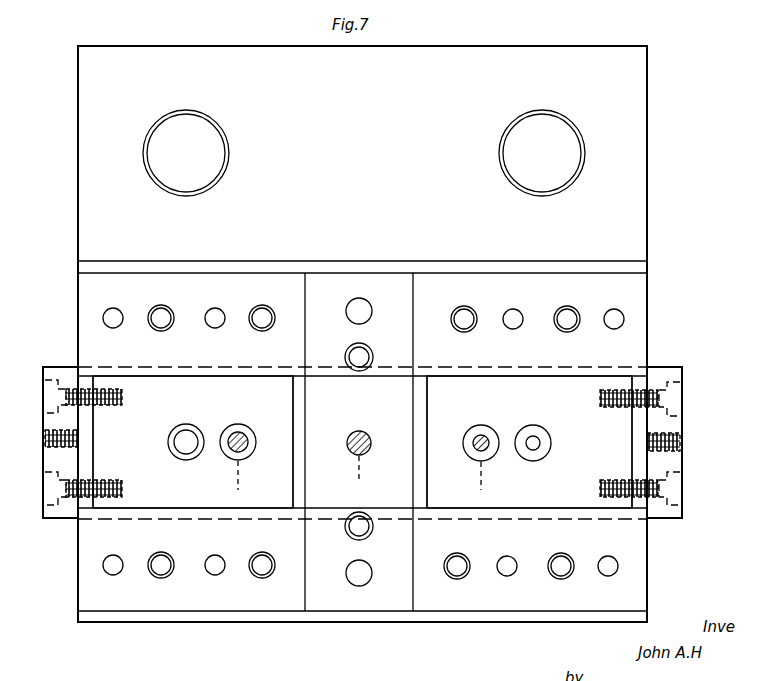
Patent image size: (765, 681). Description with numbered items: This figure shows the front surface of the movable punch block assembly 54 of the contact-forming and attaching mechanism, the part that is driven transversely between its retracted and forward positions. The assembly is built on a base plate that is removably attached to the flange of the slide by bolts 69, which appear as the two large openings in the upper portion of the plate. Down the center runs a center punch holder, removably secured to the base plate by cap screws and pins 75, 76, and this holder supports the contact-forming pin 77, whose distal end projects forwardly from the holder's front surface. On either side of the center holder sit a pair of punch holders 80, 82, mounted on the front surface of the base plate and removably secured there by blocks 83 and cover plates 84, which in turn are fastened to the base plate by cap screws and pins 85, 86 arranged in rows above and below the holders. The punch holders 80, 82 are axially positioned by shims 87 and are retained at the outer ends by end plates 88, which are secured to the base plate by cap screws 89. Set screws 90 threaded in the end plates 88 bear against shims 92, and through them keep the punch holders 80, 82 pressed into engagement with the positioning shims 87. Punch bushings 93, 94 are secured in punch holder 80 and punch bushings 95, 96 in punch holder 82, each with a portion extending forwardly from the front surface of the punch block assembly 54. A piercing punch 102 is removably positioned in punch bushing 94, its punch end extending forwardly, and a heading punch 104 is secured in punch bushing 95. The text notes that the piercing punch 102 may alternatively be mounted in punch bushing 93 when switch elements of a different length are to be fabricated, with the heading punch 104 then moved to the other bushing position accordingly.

The punch block assembly 54 is at (659, 165).
The bolts 69 is at (220, 137).
The cap screws and pins 75 is at (371, 352).
The cap screws and pins 76 is at (371, 305).
The contact-forming pin 77 is at (369, 436).
The punch holder 80 is at (545, 397).
The punch holder 82 is at (184, 400).
The blocks 83 is at (632, 540).
The cover plates 84 is at (650, 572).
The cap screws and pins 85 is at (161, 575).
The cap screws and pins 86 is at (112, 576).
The shims 87 is at (302, 404).
The end plates 88 is at (43, 460).
The cap screws 89 is at (56, 398).
The set screws 90 is at (45, 436).
The shims 92 is at (87, 449).
The punch bushing 93 is at (541, 432).
The punch bushing 94 is at (468, 436).
The punch bushing 95 is at (257, 445).
The punch bushing 96 is at (180, 457).
The piercing punch 102 is at (482, 440).
The heading punch 104 is at (232, 452).